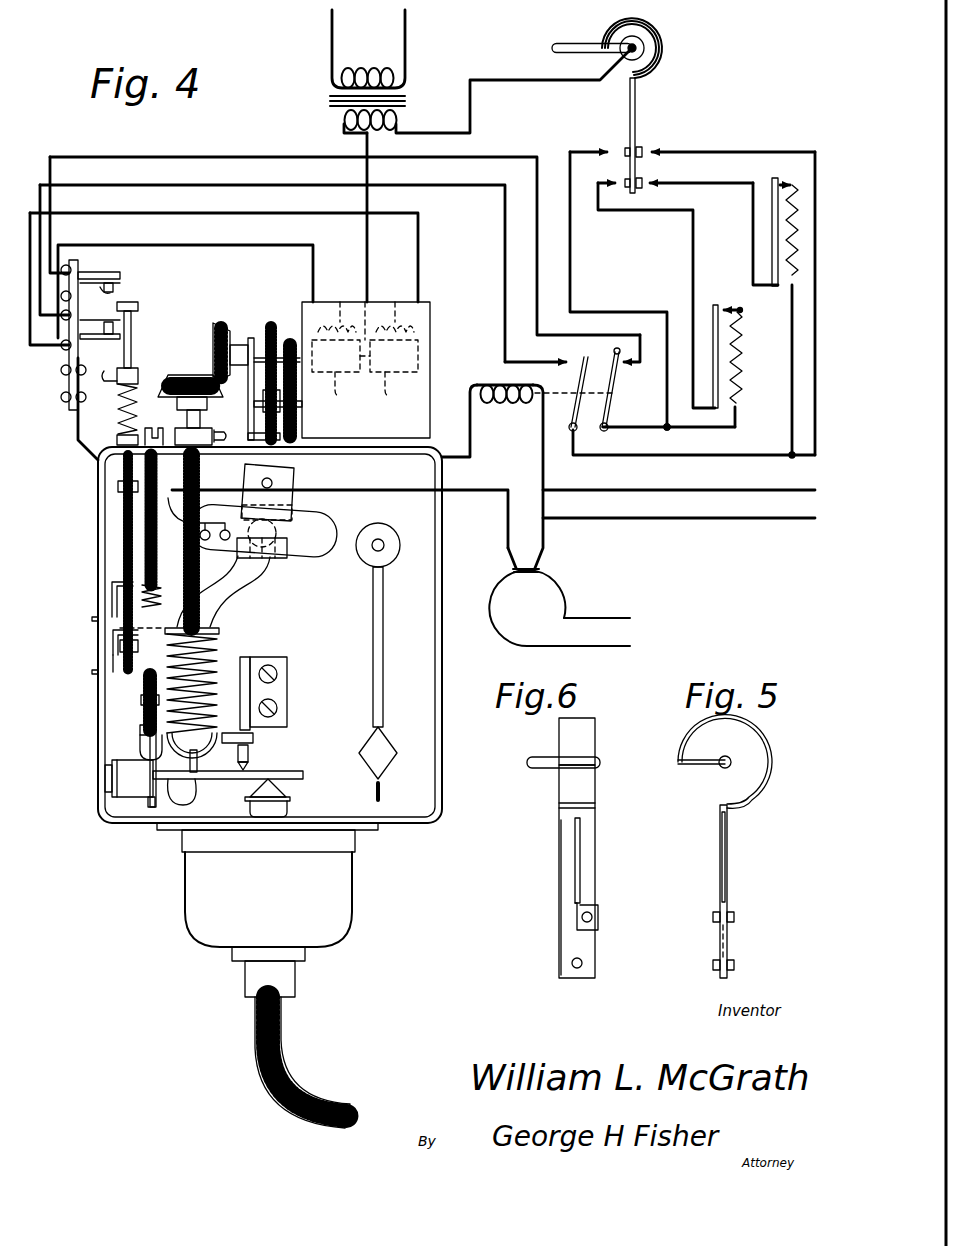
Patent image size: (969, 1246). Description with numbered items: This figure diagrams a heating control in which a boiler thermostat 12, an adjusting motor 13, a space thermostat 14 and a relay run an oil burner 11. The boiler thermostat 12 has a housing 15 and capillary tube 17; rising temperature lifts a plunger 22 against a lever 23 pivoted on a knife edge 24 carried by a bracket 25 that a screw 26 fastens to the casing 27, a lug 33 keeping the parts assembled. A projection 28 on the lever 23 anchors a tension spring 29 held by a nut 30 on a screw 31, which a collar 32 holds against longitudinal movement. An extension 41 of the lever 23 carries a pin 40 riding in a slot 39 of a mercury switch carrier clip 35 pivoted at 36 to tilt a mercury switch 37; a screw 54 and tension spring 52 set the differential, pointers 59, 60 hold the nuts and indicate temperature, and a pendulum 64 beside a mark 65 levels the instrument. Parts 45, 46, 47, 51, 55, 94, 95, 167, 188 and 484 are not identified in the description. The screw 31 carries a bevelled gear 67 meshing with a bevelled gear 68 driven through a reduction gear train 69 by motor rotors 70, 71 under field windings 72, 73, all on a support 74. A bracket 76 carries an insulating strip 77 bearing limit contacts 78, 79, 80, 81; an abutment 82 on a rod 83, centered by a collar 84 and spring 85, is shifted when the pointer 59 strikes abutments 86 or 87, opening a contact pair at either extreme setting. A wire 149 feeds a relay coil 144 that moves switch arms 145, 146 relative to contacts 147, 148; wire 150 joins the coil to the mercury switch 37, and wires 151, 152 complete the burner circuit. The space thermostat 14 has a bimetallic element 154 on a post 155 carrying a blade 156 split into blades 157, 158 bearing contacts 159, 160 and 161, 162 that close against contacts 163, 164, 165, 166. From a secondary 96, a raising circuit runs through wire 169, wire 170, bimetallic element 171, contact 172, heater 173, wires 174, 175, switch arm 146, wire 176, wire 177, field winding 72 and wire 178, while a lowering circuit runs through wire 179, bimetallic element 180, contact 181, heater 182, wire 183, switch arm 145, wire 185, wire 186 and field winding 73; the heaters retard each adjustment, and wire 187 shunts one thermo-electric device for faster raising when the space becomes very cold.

In FIG. 4, the oil burner 11 is at (562, 600).
In FIG. 4, the boiler thermostat 12 is at (95, 826).
In FIG. 4, the adjusting motor 13 is at (298, 295).
In FIG. 4, the space thermostat 14 is at (670, 54).
In FIG. 4, the housing 15 is at (343, 903).
In FIG. 4, the capillary tube 17 is at (283, 1052).
In FIG. 4, the plunger 22 is at (288, 815).
In FIG. 4, the lever 23 is at (300, 772).
In FIG. 4, the knife edge 24 is at (249, 762).
In FIG. 4, the bracket 25 is at (288, 722).
In FIG. 4, the screw 26 is at (278, 702).
In FIG. 4, the casing 27 is at (442, 675).
In FIG. 4, the projection 28 is at (190, 792).
In FIG. 4, the tension spring 29 is at (217, 668).
In FIG. 4, the nut 30 is at (220, 631).
In FIG. 4, the screw 31 is at (184, 565).
In FIG. 4, the collar 32 is at (203, 430).
In FIG. 4, the lug 33 is at (254, 738).
In FIG. 4, the mercury switch carrier clip 35 is at (245, 481).
In FIG. 4, the pivot 36 is at (273, 481).
In FIG. 4, the mercury switch 37 is at (358, 555).
In FIG. 4, the slot 39 is at (292, 508).
In FIG. 4, the pin 40 is at (280, 532).
In FIG. 4, the extension 41 is at (262, 572).
In FIG. 4, the solenoid 45 is at (112, 780).
In FIG. 4, the loop 46 is at (140, 753).
In FIG. 4, the pin 47 is at (142, 732).
In FIG. 4, the collar 51 is at (141, 706).
In FIG. 4, the tension spring 52 is at (141, 690).
In FIG. 4, the screw 54 is at (152, 540).
In FIG. 4, the bracket 55 is at (147, 428).
In FIG. 4, the pointer 59 is at (113, 642).
In FIG. 4, the pointer 60 is at (110, 597).
In FIG. 4, the pendulum 64 is at (373, 633).
In FIG. 4, the mark 65 is at (381, 787).
In FIG. 4, the bevelled gear 67 is at (203, 375).
In FIG. 4, the bevelled gear 68 is at (215, 335).
In FIG. 4, the reduction gear train 69 is at (264, 330).
In FIG. 4, the motor rotor 70 is at (350, 391).
In FIG. 4, the motor rotor 71 is at (396, 391).
In FIG. 4, the field winding 72 is at (340, 302).
In FIG. 4, the field winding 73 is at (395, 302).
In FIG. 4, the support 74 is at (253, 404).
In FIG. 4, the bracket 76 is at (76, 437).
In FIG. 4, the strip of insulating material 77 is at (66, 392).
In FIG. 4, the contact 78 is at (95, 274).
In FIG. 4, the contact 79 is at (114, 288).
In FIG. 4, the contact 80 is at (104, 324).
In FIG. 4, the contact 81 is at (106, 335).
In FIG. 4, the abutment 82 is at (139, 306).
In FIG. 4, the rod 83 is at (131, 340).
In FIG. 4, the collar 84 is at (138, 372).
In FIG. 4, the spring 85 is at (118, 408).
In FIG. 4, the abutment 86 is at (116, 487).
In FIG. 4, the abutment 87 is at (115, 653).
In FIG. 4, the transformer 94 is at (328, 101).
In FIG. 4, the primary winding 95 is at (372, 68).
In FIG. 4, the secondary 96 is at (378, 132).
In FIG. 4, the relay coil 144 is at (503, 402).
In FIG. 4, the switch arm 145 is at (575, 429).
In FIG. 4, the switch arm 146 is at (614, 392).
In FIG. 4, the contact 147 is at (562, 361).
In FIG. 4, the contact 148 is at (622, 361).
In FIG. 4, the wire 149 is at (648, 490).
In FIG. 4, the wire 150 is at (471, 453).
In FIG. 4, the wire 151 is at (484, 490).
In FIG. 4, the wire 152 is at (712, 518).
In FIG. 4, the bimetallic element 154 is at (663, 46).
In FIG. 6, the bimetallic element 154 is at (596, 740).
In FIG. 5, the bimetallic element 154 is at (758, 745).
In FIG. 6, the post 155 is at (535, 757).
In FIG. 5, the post 155 is at (740, 750).
In FIG. 4, the blade 156 is at (637, 104).
In FIG. 6, the blade 156 is at (596, 817).
In FIG. 5, the blade 156 is at (728, 826).
In FIG. 6, the blade 157 is at (559, 886).
In FIG. 5, the blade 157 is at (728, 942).
In FIG. 6, the blade 158 is at (596, 860).
In FIG. 5, the blade 158 is at (728, 862).
In FIG. 4, the contact 159 is at (626, 186).
In FIG. 6, the contact 159 is at (583, 963).
In FIG. 5, the contact 159 is at (713, 965).
In FIG. 4, the contact 160 is at (641, 187).
In FIG. 5, the contact 160 is at (734, 965).
In FIG. 4, the contact 161 is at (624, 155).
In FIG. 6, the contact 161 is at (593, 917).
In FIG. 5, the contact 161 is at (713, 917).
In FIG. 4, the contact 162 is at (641, 156).
In FIG. 5, the contact 162 is at (734, 917).
In FIG. 4, the contact 163 is at (609, 183).
In FIG. 4, the contact 164 is at (652, 183).
In FIG. 4, the contact 165 is at (602, 150).
In FIG. 4, the contact 166 is at (655, 150).
In FIG. 4, the lever 167 is at (556, 47).
In FIG. 4, the wire 169 is at (515, 80).
In FIG. 4, the wire 170 is at (622, 212).
In FIG. 4, the bimetallic element 171 is at (713, 310).
In FIG. 4, the contact 172 is at (730, 311).
In FIG. 4, the heater 173 is at (740, 364).
In FIG. 4, the wire 174 is at (725, 427).
In FIG. 4, the wire 175 is at (635, 427).
In FIG. 4, the wire 176 is at (503, 157).
In FIG. 4, the wire 177 is at (203, 247).
In FIG. 4, the wire 178 is at (366, 256).
In FIG. 4, the wire 179 is at (706, 183).
In FIG. 4, the bimetallic element 180 is at (770, 240).
In FIG. 4, the contact 181 is at (790, 183).
In FIG. 4, the heater 182 is at (791, 290).
In FIG. 4, the wire 183 is at (791, 348).
In FIG. 4, the wire 185 is at (504, 307).
In FIG. 4, the wire 186 is at (421, 247).
In FIG. 4, the wire 187 is at (572, 270).
In FIG. 4, the wire 188 is at (733, 152).
In FIG. 4, the wire 484 is at (746, 456).